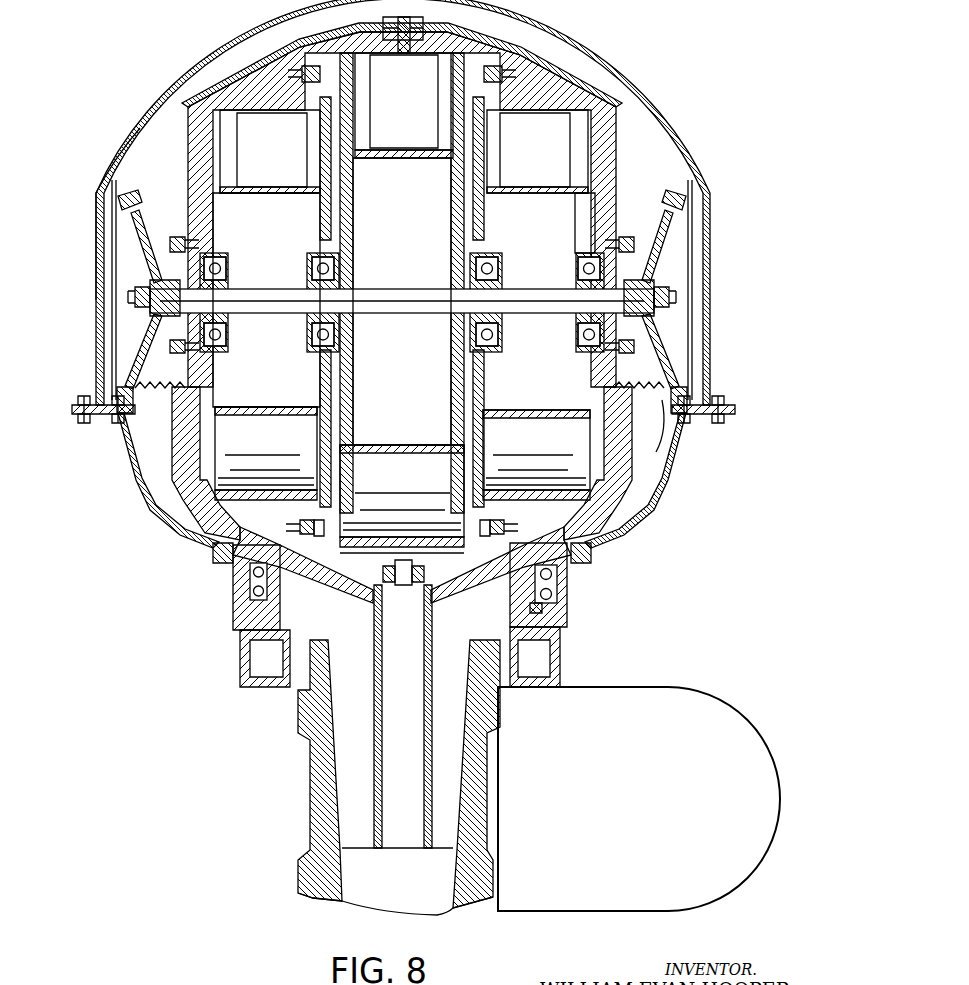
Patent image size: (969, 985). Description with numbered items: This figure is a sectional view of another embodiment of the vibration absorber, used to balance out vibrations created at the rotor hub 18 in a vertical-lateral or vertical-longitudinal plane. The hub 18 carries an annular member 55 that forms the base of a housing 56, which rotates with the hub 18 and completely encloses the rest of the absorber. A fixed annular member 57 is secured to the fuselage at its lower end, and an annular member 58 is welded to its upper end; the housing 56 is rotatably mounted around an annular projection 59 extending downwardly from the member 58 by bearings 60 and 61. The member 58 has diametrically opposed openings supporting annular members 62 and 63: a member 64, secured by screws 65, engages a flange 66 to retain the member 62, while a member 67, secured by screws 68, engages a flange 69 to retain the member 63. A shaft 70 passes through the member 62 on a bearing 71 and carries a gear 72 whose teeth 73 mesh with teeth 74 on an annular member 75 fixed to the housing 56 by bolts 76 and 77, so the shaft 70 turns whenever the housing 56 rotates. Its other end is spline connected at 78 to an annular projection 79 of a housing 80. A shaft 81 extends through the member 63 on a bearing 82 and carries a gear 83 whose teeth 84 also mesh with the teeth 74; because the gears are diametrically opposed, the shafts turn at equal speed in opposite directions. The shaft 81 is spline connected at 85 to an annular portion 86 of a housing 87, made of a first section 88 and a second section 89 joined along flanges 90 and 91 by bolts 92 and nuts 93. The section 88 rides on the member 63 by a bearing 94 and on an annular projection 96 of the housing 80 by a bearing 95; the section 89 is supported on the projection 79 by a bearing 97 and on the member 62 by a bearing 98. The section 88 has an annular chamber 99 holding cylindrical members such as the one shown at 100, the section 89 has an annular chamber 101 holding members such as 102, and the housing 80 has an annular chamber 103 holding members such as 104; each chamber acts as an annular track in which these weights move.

The rotor hub 18 is at (633, 786).
The annular member 55 is at (565, 660).
The housing 56 is at (650, 105).
The fixed annular member 57 is at (377, 740).
The annular member 58 is at (243, 635).
The annular projection 59 is at (533, 622).
The bearing 60 is at (557, 577).
The bearing 61 is at (567, 603).
The annular member 62 is at (633, 273).
The annular member 63 is at (227, 277).
The member 64 is at (633, 340).
The screws 65 is at (640, 250).
The flange 66 is at (640, 348).
The member 67 is at (168, 260).
The screws 68 is at (172, 188).
The flange 69 is at (178, 263).
The shaft 70 is at (530, 293).
The bearing 71 is at (633, 327).
The gear 72 is at (690, 217).
The teeth 73 is at (687, 203).
The teeth 74 is at (660, 447).
The annular member 75 is at (665, 415).
The bolts 76 is at (110, 397).
The bolts 77 is at (108, 425).
The spline connection 78 is at (455, 288).
The annular projection 79 is at (497, 337).
The housing 80 is at (497, 377).
The shaft 81 is at (270, 300).
The bearing 82 is at (173, 322).
The gear 83 is at (125, 222).
The teeth 84 is at (103, 178).
The spline connection 85 is at (283, 275).
The annular portion 86 is at (317, 427).
The housing 87 is at (197, 483).
The first section 88 is at (203, 440).
The second section 89 is at (630, 513).
The flange 90 is at (380, 647).
The flange 91 is at (427, 657).
The bolts 92 is at (373, 577).
The nuts 93 is at (420, 580).
The bearing 94 is at (222, 347).
The bearing 95 is at (350, 347).
The annular projection 96 is at (470, 292).
The bearing 97 is at (477, 343).
The bearing 98 is at (573, 270).
The annular chamber 99 is at (340, 423).
The cylindrical member 100 is at (240, 457).
The annular chamber 101 is at (513, 423).
The cylindrical member 102 is at (509, 455).
The annular chamber 103 is at (383, 453).
The cylindrical member 104 is at (376, 490).